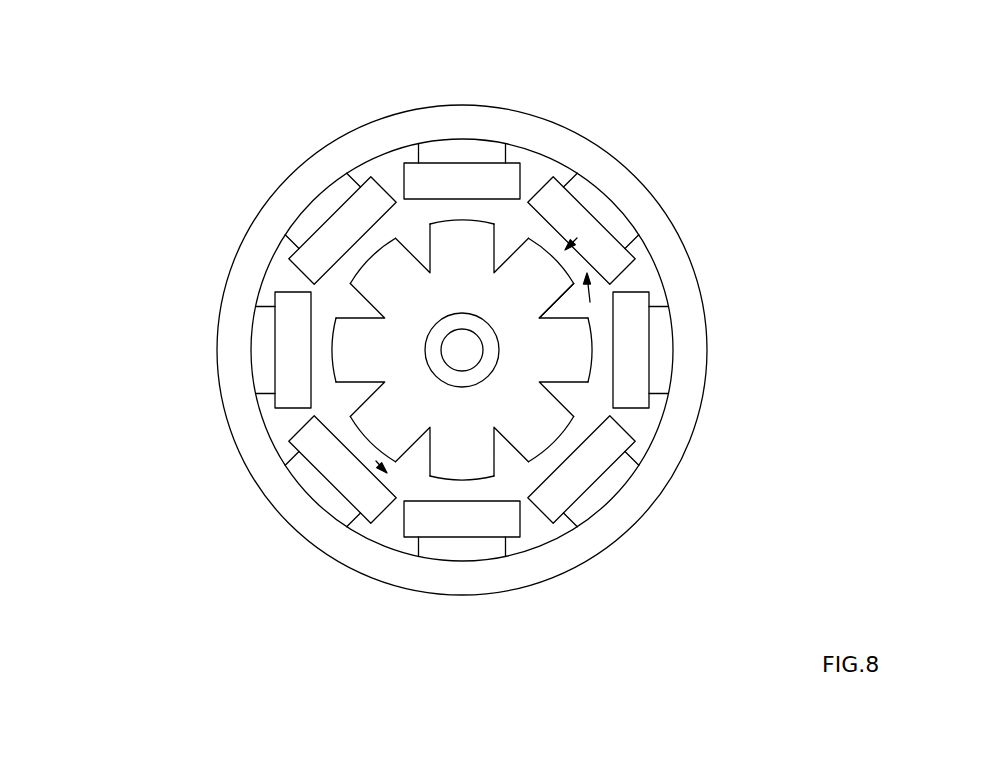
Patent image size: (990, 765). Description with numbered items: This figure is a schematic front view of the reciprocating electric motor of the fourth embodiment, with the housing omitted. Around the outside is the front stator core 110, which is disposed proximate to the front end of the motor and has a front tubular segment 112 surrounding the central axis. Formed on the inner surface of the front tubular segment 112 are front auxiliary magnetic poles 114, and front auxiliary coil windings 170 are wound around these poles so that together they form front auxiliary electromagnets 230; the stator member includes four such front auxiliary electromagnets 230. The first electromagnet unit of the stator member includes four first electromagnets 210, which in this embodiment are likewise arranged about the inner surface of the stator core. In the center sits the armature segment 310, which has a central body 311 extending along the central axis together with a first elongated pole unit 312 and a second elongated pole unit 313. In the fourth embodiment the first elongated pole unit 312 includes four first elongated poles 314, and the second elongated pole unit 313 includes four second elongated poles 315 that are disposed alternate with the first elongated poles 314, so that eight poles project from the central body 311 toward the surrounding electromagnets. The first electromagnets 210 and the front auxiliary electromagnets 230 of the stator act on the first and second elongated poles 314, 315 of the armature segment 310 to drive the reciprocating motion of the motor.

The front stator core 110 is at (722, 345).
The front tubular segment 112 is at (488, 577).
The front auxiliary magnetic pole 114 is at (310, 216).
The front auxiliary coil winding 170 is at (368, 195).
The first electromagnet 210 is at (449, 341).
The front auxiliary electromagnet 230 is at (392, 216).
The armature segment 310 is at (476, 375).
The central body 311 is at (496, 382).
The first elongated pole unit 312 is at (431, 470).
The second elongated pole unit 313 is at (582, 260).
The first elongated pole 314 is at (446, 240).
The second elongated pole 315 is at (530, 262).